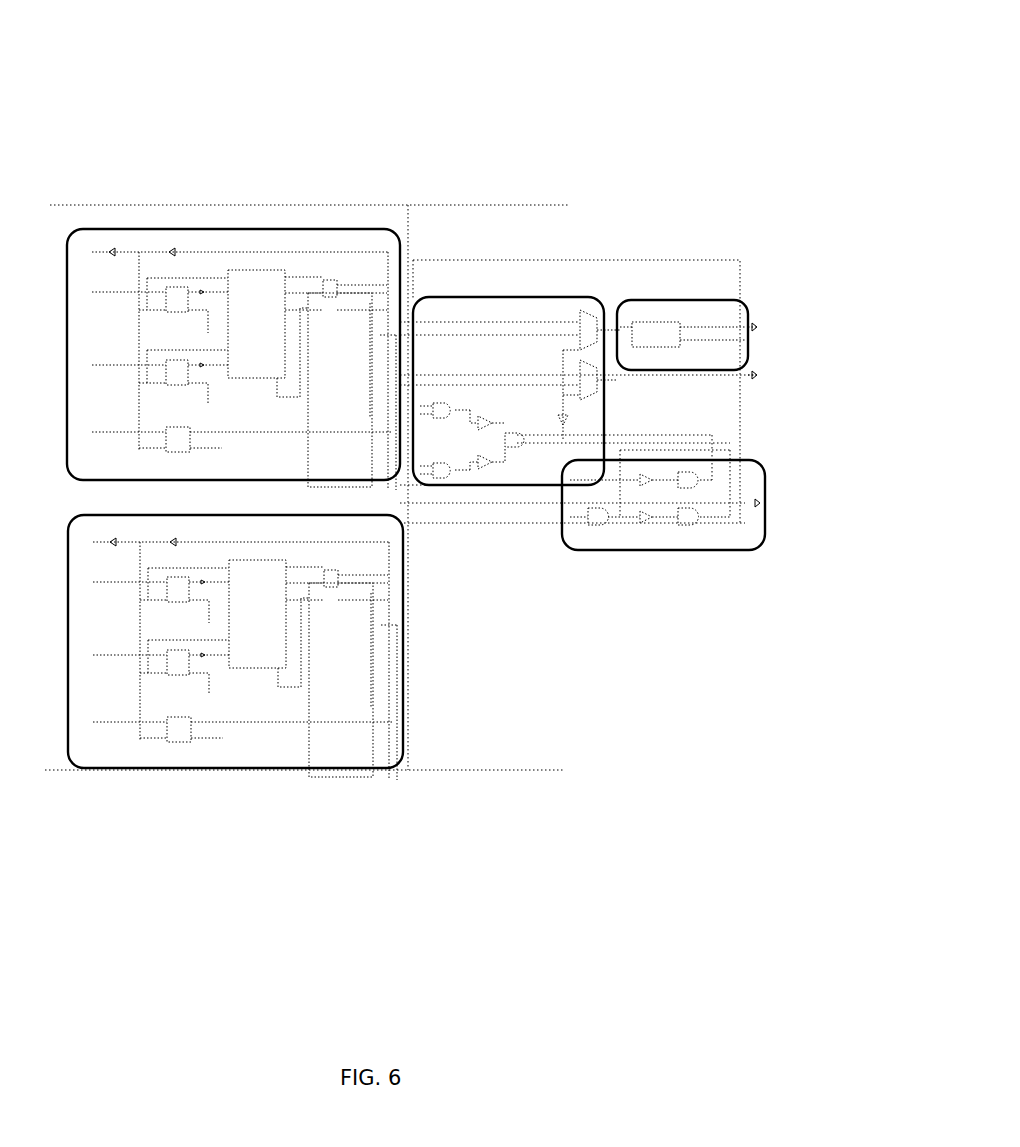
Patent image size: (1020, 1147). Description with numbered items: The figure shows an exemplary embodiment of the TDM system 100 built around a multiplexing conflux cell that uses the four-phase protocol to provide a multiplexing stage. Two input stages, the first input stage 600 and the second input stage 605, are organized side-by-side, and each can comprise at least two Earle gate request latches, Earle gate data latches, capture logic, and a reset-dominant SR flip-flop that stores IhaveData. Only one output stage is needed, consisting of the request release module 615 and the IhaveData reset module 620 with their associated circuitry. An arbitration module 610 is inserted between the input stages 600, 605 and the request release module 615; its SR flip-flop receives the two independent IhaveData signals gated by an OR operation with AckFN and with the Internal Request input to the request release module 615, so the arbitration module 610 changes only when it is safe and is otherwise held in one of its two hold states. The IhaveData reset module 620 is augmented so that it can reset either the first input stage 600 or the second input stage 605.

The TDM system 100 is at (598, 90).
The first input stage 600 is at (402, 218).
The second input stage 605 is at (407, 762).
The arbitration module 610 is at (592, 283).
The request release module 615 is at (750, 292).
The IhaveData reset module 620 is at (757, 560).